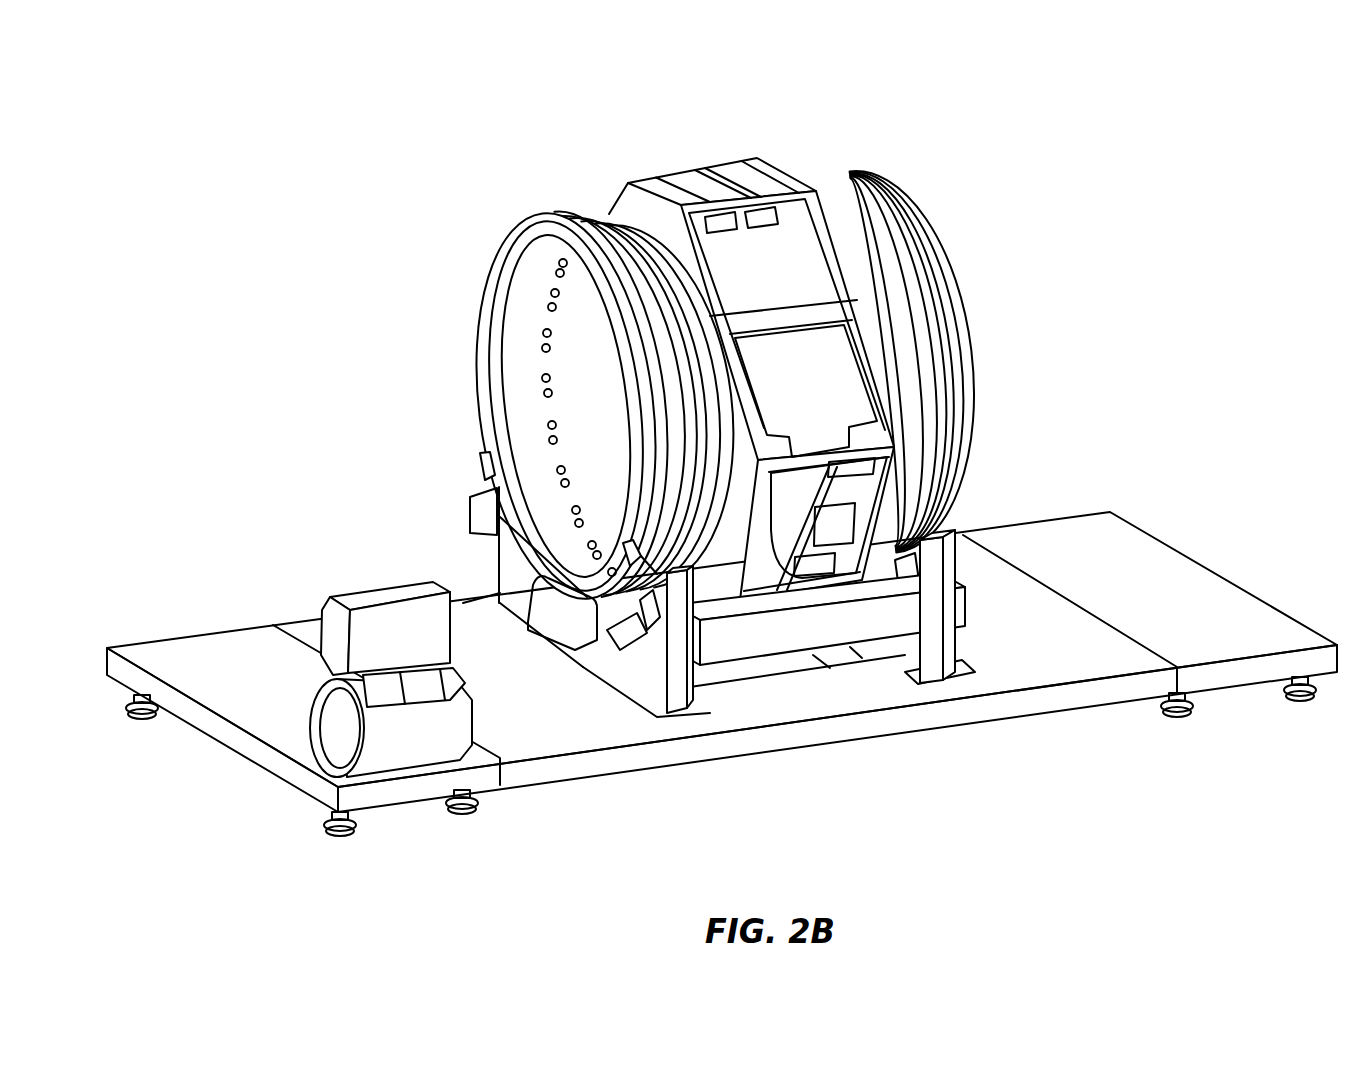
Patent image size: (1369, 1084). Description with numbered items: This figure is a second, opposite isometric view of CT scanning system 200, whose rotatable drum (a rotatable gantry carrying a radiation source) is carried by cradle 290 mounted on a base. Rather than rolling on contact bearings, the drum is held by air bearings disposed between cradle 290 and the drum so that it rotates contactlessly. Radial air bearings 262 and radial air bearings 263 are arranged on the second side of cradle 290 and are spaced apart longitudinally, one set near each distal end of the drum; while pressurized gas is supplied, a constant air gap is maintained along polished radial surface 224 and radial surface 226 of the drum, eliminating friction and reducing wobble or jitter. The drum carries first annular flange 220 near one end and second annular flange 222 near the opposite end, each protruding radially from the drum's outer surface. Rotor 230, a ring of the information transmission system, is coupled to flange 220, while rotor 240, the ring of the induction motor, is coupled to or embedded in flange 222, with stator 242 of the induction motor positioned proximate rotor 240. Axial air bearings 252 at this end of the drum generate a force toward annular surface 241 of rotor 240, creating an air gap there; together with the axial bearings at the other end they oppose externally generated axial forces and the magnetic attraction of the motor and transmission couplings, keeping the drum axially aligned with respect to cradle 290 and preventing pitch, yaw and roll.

The CT scanning system 200 is at (107, 132).
The first annular flange 220 is at (850, 182).
The second annular flange 222 is at (590, 222).
The radial surface 224 is at (928, 465).
The radial surface 226 is at (742, 485).
The rotor 230 is at (910, 207).
The rotor 240 is at (528, 230).
The annular surface 241 is at (483, 294).
The stator 242 is at (553, 610).
The axial air bearings 252 is at (620, 547).
The radial air bearings 262 is at (890, 530).
The radial air bearings 263 is at (688, 575).
The cradle 290 is at (830, 625).